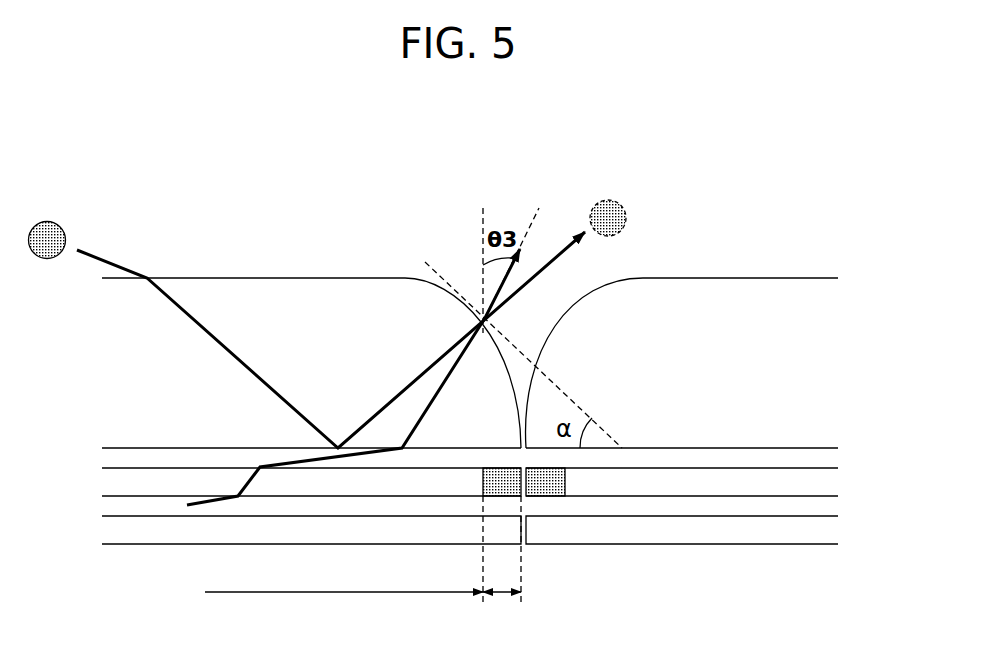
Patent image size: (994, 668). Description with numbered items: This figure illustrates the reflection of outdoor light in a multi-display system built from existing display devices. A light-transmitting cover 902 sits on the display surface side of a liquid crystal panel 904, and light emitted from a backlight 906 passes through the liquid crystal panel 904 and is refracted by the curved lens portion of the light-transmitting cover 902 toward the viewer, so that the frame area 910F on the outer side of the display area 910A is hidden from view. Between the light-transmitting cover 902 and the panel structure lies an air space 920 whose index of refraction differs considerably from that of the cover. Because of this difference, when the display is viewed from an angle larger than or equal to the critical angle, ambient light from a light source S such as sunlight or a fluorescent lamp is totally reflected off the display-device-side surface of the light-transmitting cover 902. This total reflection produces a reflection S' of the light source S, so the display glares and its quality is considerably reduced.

The light-transmitting cover 902 is at (828, 352).
The air space 920 is at (826, 457).
The liquid crystal panel 904 is at (824, 482).
The backlight 906 is at (820, 533).
The display area 910A is at (344, 612).
The frame area 910F is at (503, 564).
The light source S is at (71, 215).
The reflection of light from the light source S' is at (641, 196).